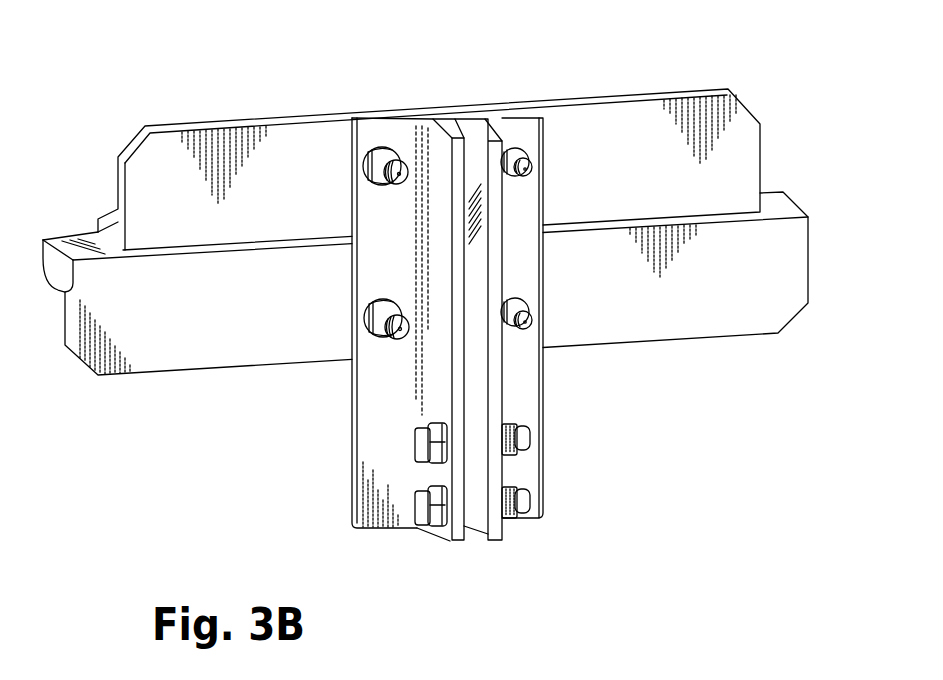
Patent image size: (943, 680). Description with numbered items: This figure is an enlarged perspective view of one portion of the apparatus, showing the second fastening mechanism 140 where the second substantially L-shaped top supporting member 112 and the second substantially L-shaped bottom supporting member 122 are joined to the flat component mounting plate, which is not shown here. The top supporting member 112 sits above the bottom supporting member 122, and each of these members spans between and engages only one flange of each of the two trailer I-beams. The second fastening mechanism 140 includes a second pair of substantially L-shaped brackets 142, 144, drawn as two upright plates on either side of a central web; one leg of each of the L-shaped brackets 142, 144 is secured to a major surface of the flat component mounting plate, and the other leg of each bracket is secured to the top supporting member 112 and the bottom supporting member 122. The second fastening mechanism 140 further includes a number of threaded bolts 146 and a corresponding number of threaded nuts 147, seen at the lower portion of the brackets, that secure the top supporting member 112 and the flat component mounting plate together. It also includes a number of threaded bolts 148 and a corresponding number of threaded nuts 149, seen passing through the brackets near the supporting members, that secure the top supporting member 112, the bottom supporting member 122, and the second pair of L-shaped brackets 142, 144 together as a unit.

The second substantially L-shaped top supporting member 112 is at (602, 98).
The second substantially L-shaped bottom supporting member 122 is at (735, 337).
The second fastening mechanism 140 is at (443, 559).
The L-shaped bracket 142 is at (543, 430).
The L-shaped bracket 144 is at (352, 452).
The threaded bolt 146 is at (424, 462).
The threaded nut 147 is at (515, 447).
The threaded bolt 148 is at (365, 152).
The threaded nut 149 is at (503, 142).